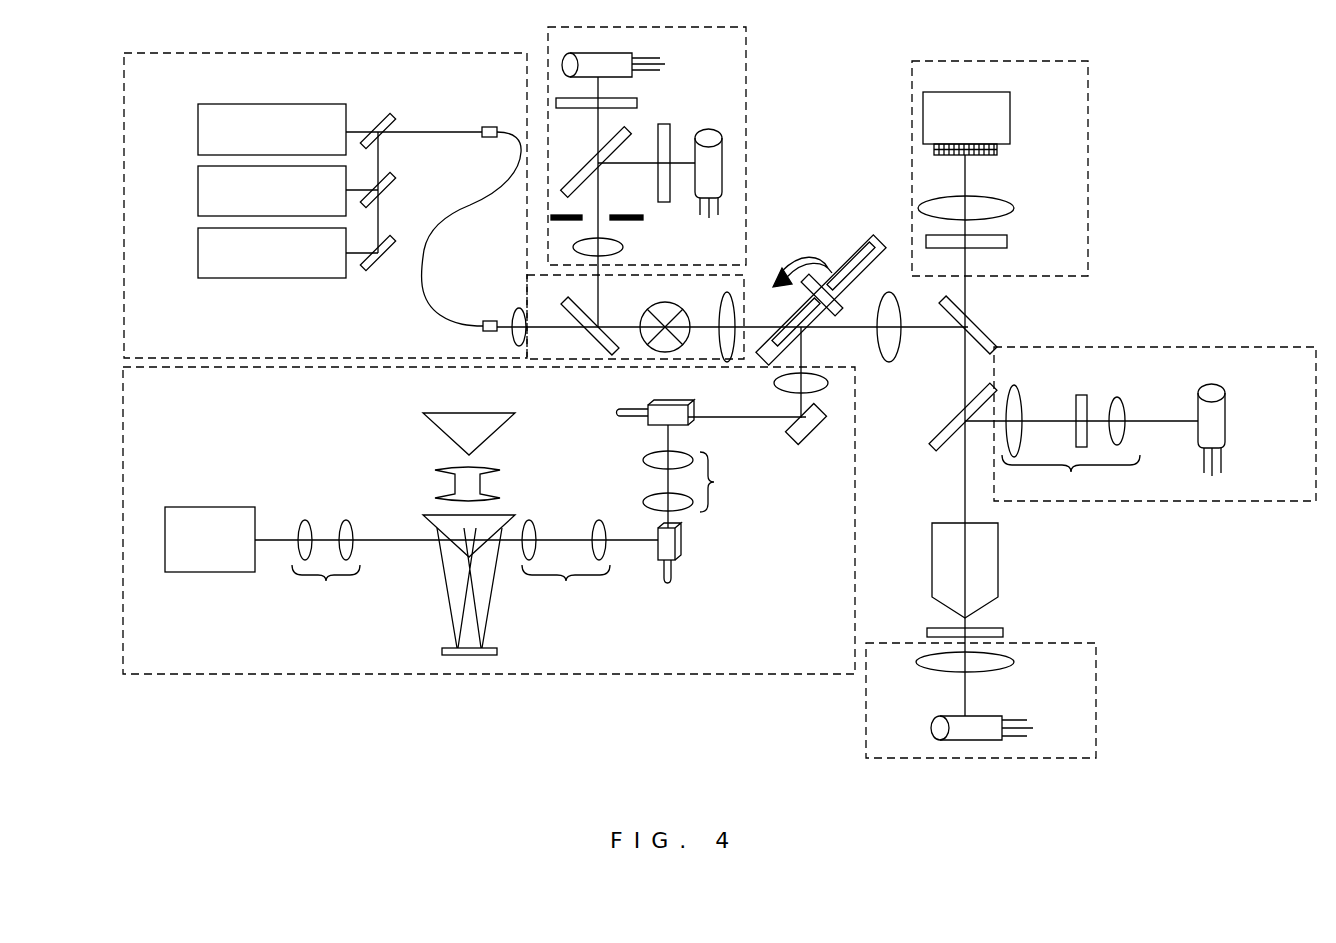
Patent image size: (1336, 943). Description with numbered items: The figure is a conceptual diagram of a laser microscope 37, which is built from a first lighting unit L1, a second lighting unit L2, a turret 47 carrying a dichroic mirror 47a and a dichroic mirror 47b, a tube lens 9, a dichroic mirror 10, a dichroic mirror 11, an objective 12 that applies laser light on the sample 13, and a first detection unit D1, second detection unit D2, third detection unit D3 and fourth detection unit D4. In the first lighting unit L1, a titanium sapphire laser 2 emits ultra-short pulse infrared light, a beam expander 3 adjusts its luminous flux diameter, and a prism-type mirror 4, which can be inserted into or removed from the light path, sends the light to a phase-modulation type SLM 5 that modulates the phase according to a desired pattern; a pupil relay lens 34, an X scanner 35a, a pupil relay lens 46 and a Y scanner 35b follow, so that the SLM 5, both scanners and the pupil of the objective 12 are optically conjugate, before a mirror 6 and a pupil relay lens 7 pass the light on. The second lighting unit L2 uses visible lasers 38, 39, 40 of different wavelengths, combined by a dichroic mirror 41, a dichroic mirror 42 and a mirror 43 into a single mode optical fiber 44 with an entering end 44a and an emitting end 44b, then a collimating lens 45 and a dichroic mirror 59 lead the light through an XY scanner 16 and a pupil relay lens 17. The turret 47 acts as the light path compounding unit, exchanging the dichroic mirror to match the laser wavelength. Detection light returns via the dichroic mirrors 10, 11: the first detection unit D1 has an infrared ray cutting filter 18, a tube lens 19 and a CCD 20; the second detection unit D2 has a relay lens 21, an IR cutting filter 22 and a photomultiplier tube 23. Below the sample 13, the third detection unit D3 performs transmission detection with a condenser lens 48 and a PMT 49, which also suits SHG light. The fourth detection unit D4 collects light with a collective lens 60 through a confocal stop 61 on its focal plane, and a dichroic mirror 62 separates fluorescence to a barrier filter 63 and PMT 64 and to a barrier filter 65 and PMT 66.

The titanium sapphire laser 2 is at (207, 518).
The beam expander 3 is at (326, 565).
The prism-type mirror 4 is at (456, 526).
The phase-modulation type SLM 5 is at (470, 657).
The mirror 6 is at (815, 438).
The pupil relay lens 7 is at (830, 385).
The tube lens 9 is at (893, 345).
The dichroic mirror 10 is at (988, 333).
The dichroic mirror 11 is at (940, 437).
The objective 12 is at (940, 560).
The sample 13 is at (1003, 632).
The XY scanner 16 is at (653, 318).
The pupil relay lens 17 is at (727, 296).
The infrared ray cutting filter 18 is at (995, 243).
The tube lens 19 is at (1000, 210).
The charge coupled device 20 is at (995, 124).
The relay lens 21 is at (1071, 443).
The IR cutting filter 22 is at (1081, 410).
The photomultiplier tube 23 is at (1213, 425).
The pupil relay lens 34 is at (566, 566).
The X scanner 35a is at (677, 548).
The Y scanner 35b is at (652, 425).
The laser microscope 37 is at (1243, 83).
The laser 38 is at (220, 132).
The laser 39 is at (220, 194).
The laser 40 is at (220, 256).
The dichroic mirror 41 is at (382, 115).
The dichroic mirror 42 is at (392, 188).
The mirror 43 is at (373, 268).
The single mode optical fiber 44 is at (435, 225).
The entering end 44a is at (488, 127).
The emitting end 44b is at (490, 321).
The collimating lens 45 is at (519, 310).
The pupil relay lens 46 is at (698, 481).
The turret 47 is at (858, 240).
The dichroic mirror 47a is at (800, 315).
The dichroic mirror 47b is at (846, 262).
The condenser lens 48 is at (1008, 662).
The PMT 49 is at (972, 720).
The dichroic mirror 59 is at (580, 318).
The collective lens 60 is at (612, 246).
The confocal stop 61 is at (616, 213).
The dichroic mirror 62 is at (573, 178).
The barrier filter 63 is at (620, 100).
The PMT 64 is at (596, 55).
The barrier filter 65 is at (672, 128).
The PMT 66 is at (712, 170).
The first lighting unit L1 is at (586, 676).
The second lighting unit L2 is at (308, 55).
The first detection unit D1 is at (1088, 172).
The second detection unit D2 is at (1192, 501).
The third detection unit D3 is at (1096, 680).
The fourth detection unit D4 is at (746, 70).